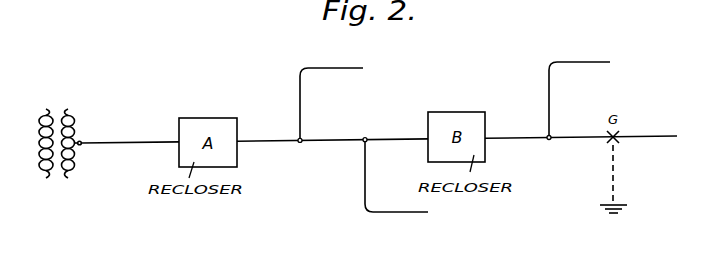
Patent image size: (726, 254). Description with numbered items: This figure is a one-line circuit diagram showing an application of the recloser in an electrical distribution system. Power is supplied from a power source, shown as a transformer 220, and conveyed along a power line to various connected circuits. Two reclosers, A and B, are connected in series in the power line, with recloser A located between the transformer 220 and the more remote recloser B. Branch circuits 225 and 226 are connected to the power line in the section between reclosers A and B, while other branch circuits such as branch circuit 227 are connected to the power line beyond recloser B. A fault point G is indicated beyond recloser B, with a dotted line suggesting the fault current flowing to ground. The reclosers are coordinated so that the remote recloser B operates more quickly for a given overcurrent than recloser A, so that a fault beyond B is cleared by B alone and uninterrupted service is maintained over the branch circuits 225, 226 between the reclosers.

The transformer 220 is at (57, 104).
The branch circuit 225 is at (300, 99).
The branch circuit 226 is at (365, 186).
The branch circuit 227 is at (549, 97).